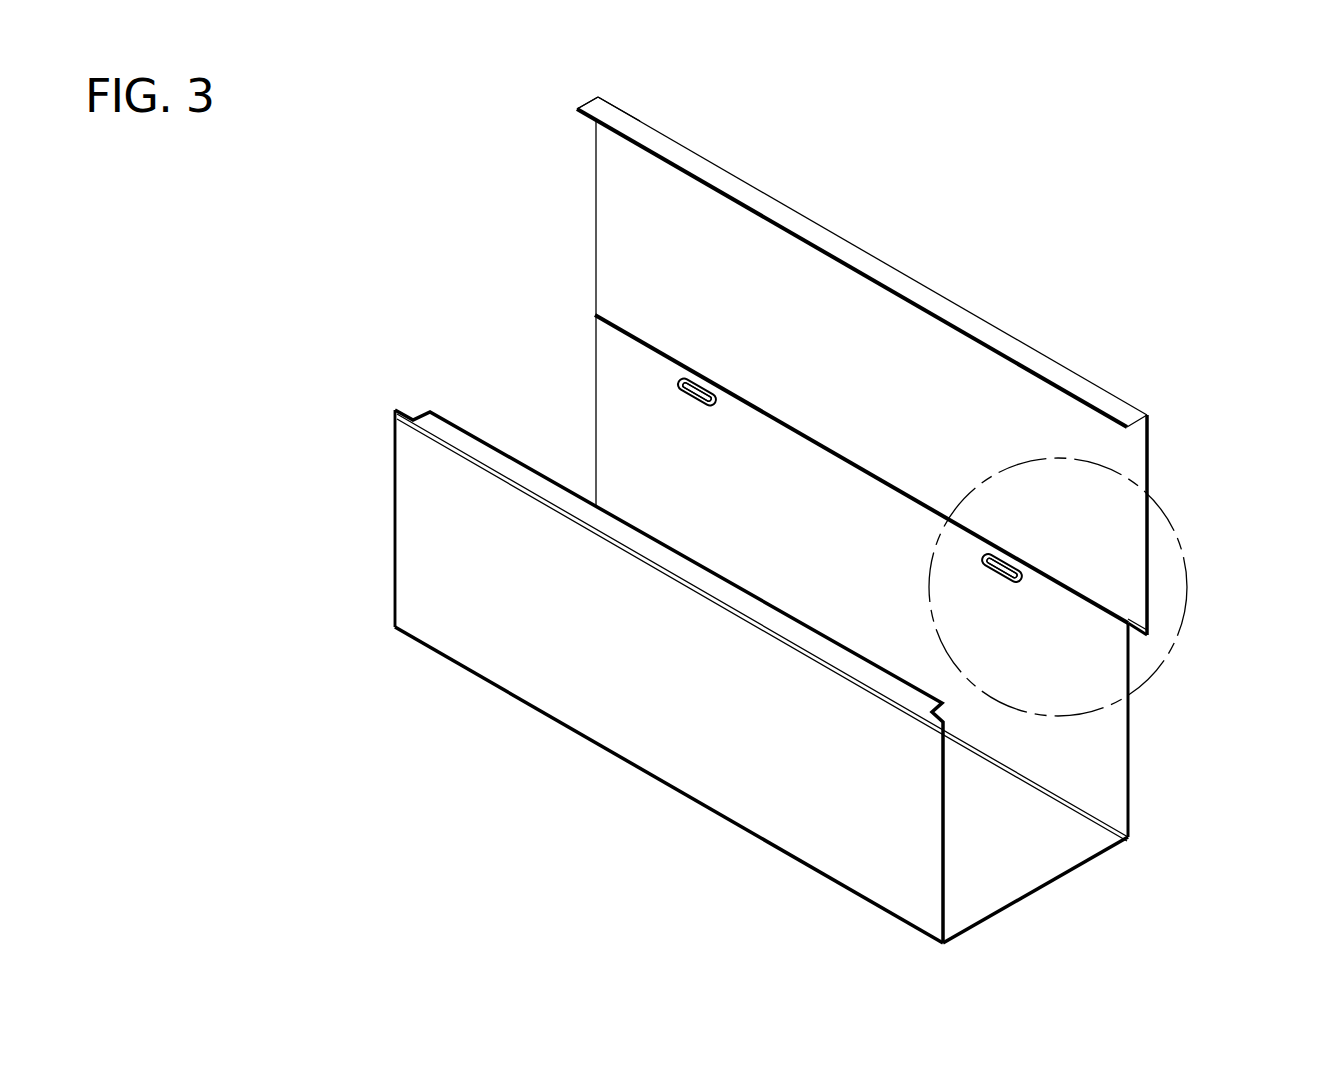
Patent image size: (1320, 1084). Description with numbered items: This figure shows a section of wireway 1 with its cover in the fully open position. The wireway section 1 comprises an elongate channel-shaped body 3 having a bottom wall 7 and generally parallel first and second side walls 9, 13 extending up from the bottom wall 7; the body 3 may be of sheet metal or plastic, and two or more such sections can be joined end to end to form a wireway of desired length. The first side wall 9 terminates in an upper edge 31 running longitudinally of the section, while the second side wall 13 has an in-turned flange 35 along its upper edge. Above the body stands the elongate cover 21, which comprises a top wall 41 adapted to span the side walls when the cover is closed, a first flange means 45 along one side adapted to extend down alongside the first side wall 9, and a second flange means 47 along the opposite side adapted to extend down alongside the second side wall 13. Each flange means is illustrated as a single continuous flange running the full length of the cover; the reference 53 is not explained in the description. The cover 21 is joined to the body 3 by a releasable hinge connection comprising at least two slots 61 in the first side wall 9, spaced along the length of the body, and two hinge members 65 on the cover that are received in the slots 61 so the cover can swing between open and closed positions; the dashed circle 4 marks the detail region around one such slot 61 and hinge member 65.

The wireway section 1 is at (1082, 260).
The channel-shaped body 3 is at (586, 746).
The detail area 4 is at (1167, 510).
The bottom wall 7 is at (1036, 890).
The first side wall 9 is at (1131, 741).
The second side wall 13 is at (394, 522).
The cover 21 is at (700, 141).
The upper edge 31 is at (628, 345).
The in-turned flange 35 is at (440, 412).
The top wall 41 is at (645, 232).
The first flange means 45 is at (1134, 634).
The second flange means 47 is at (594, 102).
The flange edge 53 is at (606, 131).
The slots 61 is at (721, 389).
The hinge members 65 is at (689, 409).